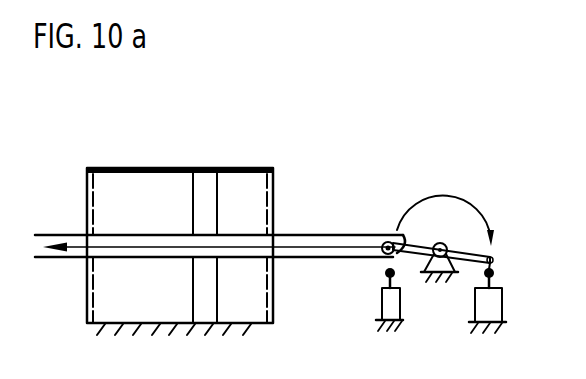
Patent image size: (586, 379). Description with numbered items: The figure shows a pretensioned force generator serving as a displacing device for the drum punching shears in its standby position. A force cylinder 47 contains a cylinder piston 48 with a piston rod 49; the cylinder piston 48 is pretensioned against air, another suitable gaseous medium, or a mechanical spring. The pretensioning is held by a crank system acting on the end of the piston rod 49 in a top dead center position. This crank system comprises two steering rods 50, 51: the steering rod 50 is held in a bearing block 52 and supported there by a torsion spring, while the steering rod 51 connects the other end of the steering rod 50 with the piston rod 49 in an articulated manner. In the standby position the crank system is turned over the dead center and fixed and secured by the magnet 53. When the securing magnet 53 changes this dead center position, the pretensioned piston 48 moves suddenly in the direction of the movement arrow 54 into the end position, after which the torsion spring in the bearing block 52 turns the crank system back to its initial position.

The force cylinder 47 is at (116, 168).
The cylinder piston 48 is at (199, 168).
The piston rod 49 is at (302, 258).
The steering rod 50 is at (462, 247).
The steering rod 51 is at (410, 253).
The bearing block 52 is at (460, 251).
The magnet 53 is at (495, 312).
The movement arrow 54 is at (68, 248).